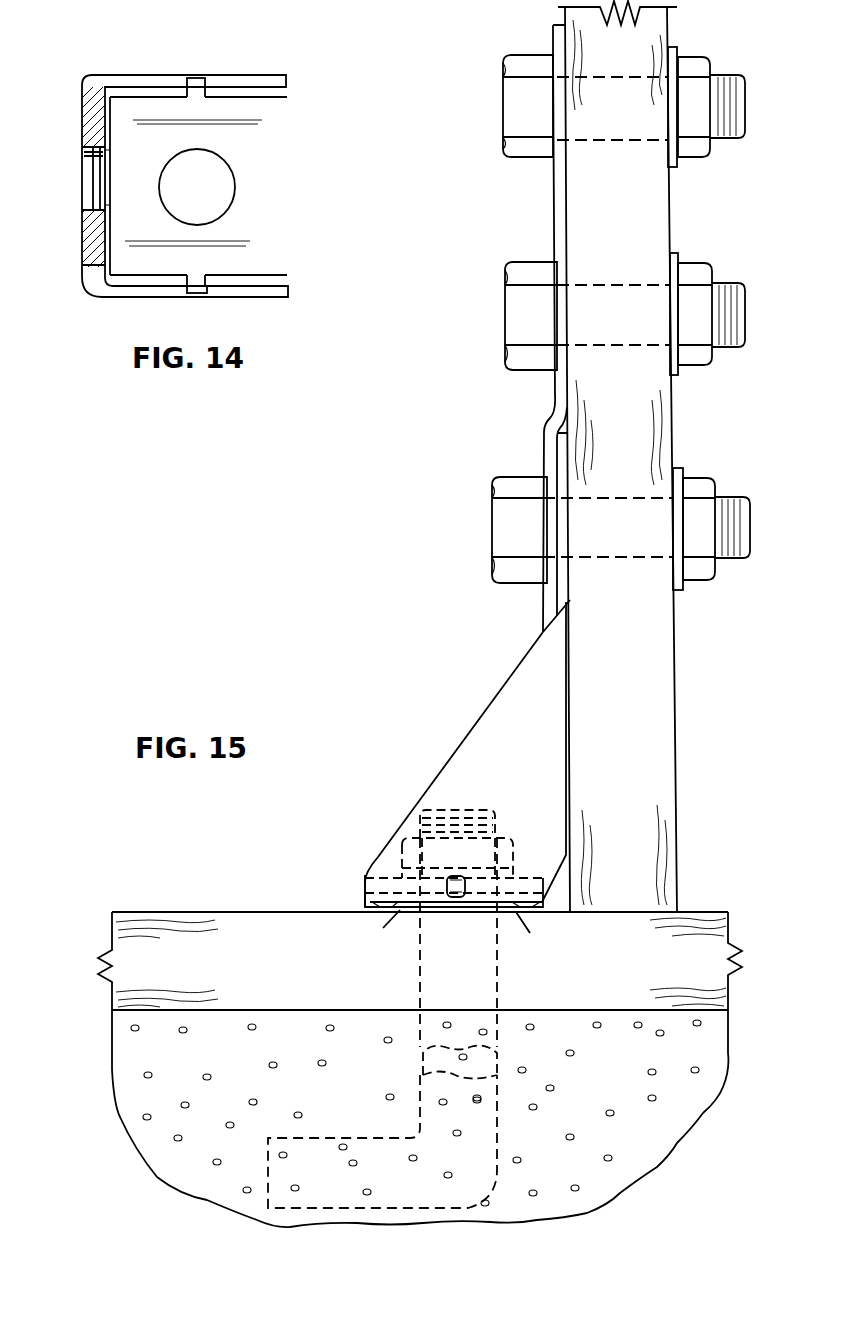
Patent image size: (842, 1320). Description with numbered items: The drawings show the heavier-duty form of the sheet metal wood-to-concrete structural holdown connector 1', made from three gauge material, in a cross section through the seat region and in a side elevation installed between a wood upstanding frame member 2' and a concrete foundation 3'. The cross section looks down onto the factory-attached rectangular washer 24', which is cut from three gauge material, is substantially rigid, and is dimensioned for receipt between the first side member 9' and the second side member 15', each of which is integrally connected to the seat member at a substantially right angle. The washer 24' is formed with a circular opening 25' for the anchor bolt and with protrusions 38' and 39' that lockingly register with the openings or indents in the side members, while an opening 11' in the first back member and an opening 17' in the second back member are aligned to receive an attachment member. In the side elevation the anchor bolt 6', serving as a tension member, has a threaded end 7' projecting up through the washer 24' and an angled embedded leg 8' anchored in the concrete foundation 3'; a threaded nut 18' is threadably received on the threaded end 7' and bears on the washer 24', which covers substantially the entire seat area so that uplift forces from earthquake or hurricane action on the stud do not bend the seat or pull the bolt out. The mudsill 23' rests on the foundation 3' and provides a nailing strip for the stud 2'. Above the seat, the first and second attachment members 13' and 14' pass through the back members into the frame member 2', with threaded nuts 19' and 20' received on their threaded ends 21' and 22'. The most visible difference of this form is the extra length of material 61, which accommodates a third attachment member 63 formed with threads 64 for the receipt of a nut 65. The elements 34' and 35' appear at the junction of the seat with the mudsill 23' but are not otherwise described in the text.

In FIG. 15, the structural holdown connector 1' is at (512, 342).
In FIG. 15, the wood upstanding frame member 2' is at (645, 456).
In FIG. 15, the concrete foundation 3' is at (420, 1118).
In FIG. 15, the anchor bolt 6' is at (486, 958).
In FIG. 15, the threaded end 7' is at (482, 813).
In FIG. 15, the angled embedded leg 8' is at (382, 1140).
In FIG. 14, the first side member 9' is at (179, 193).
In FIG. 14, the opening 11' is at (128, 169).
In FIG. 15, the first attachment member 13' is at (754, 515).
In FIG. 15, the second attachment member 14' is at (754, 313).
In FIG. 14, the second side member 15' is at (209, 138).
In FIG. 15, the second side member 15' is at (465, 754).
In FIG. 14, the opening 17' is at (72, 176).
In FIG. 15, the threaded nut 18' is at (485, 851).
In FIG. 15, the threaded nut 19' is at (519, 505).
In FIG. 15, the threaded nut 20' is at (506, 313).
In FIG. 15, the threaded end 21' is at (728, 510).
In FIG. 15, the threaded end 22' is at (727, 302).
In FIG. 15, the mudsill 23' is at (420, 943).
In FIG. 14, the rectangular washer 24' is at (233, 186).
In FIG. 15, the rectangular washer 24' is at (470, 877).
In FIG. 14, the circular opening 25' is at (210, 178).
In FIG. 15, the weld 34' is at (378, 933).
In FIG. 15, the weld 35' is at (541, 932).
In FIG. 14, the protrusion 38' is at (228, 303).
In FIG. 14, the protrusion 39' is at (199, 59).
In FIG. 15, the protrusion 39' is at (469, 871).
In FIG. 15, the extra length of material 61 is at (552, 38).
In FIG. 15, the third attachment member 63 is at (523, 150).
In FIG. 15, the threads 64 is at (717, 80).
In FIG. 15, the nut 65 is at (688, 57).